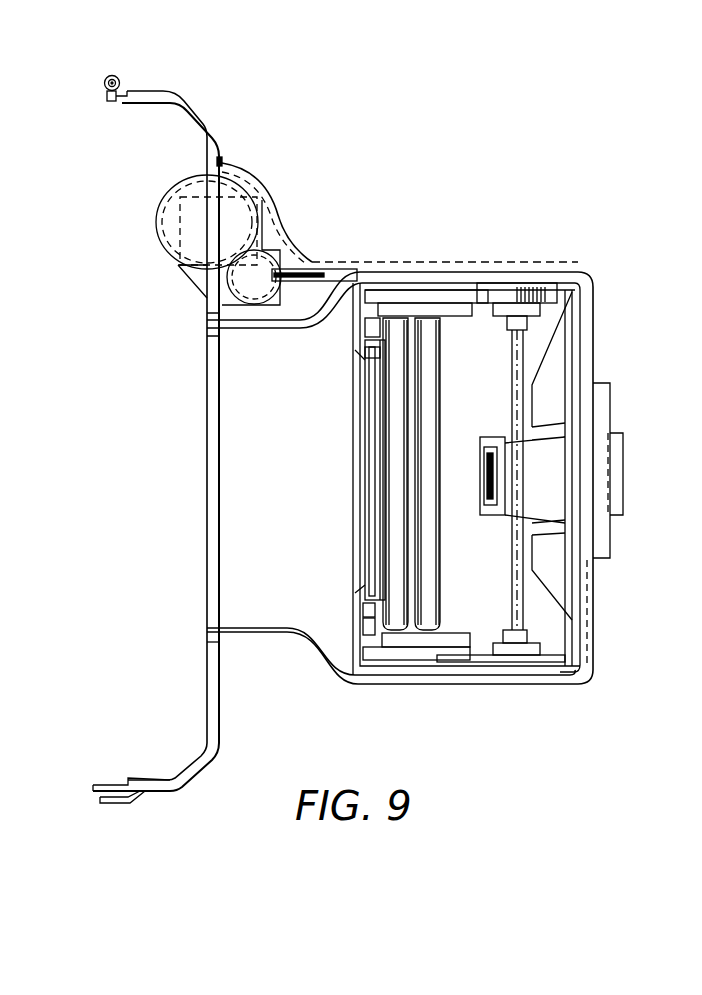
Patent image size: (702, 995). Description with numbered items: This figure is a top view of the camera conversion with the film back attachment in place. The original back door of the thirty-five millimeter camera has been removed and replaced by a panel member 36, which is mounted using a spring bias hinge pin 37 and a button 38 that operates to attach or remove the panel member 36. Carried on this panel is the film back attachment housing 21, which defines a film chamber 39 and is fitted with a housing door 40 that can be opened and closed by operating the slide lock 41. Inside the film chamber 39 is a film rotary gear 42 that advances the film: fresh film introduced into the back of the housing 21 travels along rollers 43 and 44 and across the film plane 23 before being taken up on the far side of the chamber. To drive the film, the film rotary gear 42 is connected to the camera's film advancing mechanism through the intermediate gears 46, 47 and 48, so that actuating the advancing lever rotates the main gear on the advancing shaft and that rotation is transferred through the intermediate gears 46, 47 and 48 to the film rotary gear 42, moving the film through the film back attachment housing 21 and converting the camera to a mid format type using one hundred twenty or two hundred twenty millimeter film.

The film back attachment housing 21 is at (460, 667).
The film plane 23 is at (382, 438).
The panel member 36 is at (185, 102).
The spring bias hinge pin 37 is at (107, 75).
The button 38 is at (110, 102).
The film chamber 39 is at (462, 340).
The housing door 40 is at (585, 358).
The slide lock 41 is at (618, 469).
The film rotary gear 42 is at (523, 298).
The roller 43 is at (442, 337).
The roller 44 is at (392, 337).
The intermediate gear 46 is at (172, 253).
The intermediate gear 47 is at (262, 266).
The intermediate gear 48 is at (298, 283).